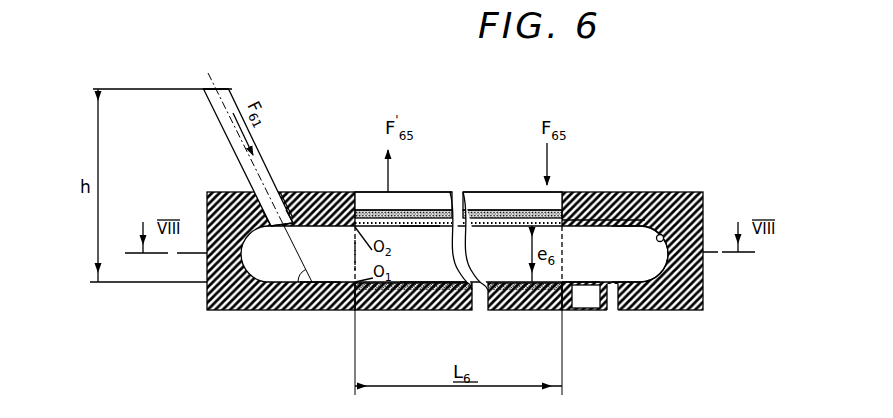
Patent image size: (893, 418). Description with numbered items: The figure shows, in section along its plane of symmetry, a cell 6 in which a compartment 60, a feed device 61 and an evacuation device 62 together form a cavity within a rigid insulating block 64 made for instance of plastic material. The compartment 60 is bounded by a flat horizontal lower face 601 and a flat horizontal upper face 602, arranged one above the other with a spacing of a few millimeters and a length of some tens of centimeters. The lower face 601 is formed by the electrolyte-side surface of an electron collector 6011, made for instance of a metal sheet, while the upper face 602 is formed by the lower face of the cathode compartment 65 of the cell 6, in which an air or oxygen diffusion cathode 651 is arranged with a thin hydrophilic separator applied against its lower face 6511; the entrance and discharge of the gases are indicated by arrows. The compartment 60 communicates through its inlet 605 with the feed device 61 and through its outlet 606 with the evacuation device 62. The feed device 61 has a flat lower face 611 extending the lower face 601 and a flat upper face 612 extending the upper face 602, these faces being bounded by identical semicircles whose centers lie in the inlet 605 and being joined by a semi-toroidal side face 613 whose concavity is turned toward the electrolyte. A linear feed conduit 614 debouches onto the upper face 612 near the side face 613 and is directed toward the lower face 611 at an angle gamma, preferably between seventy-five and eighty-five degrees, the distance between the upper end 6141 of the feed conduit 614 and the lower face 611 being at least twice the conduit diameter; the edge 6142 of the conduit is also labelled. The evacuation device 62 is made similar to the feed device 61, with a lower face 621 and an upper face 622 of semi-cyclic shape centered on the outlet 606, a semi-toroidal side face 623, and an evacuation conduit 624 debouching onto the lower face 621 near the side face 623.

The cell 6 is at (298, 150).
The compartment 60 is at (517, 253).
The lower face 601 is at (460, 280).
The upper face 602 is at (428, 255).
The inlet 605 is at (355, 258).
The outlet 606 is at (562, 257).
The electron collector 6011 is at (430, 293).
The feed device 61 is at (352, 253).
The lower face 611 is at (345, 278).
The upper face 612 is at (333, 229).
The side face 613 is at (250, 273).
The feed conduit 614 is at (228, 142).
The upper end 6141 is at (230, 89).
The blade right edge 6142 is at (298, 190).
The evacuation device 62 is at (624, 253).
The lower face 621 is at (586, 296).
The upper face 622 is at (605, 218).
The side face 623 is at (663, 236).
The evacuation conduit 624 is at (612, 308).
The rigid insulating block 64 is at (688, 192).
The cathode compartment 65 is at (478, 192).
The air or oxygen diffusion cathode 651 is at (493, 212).
The lower face 6511 is at (388, 212).